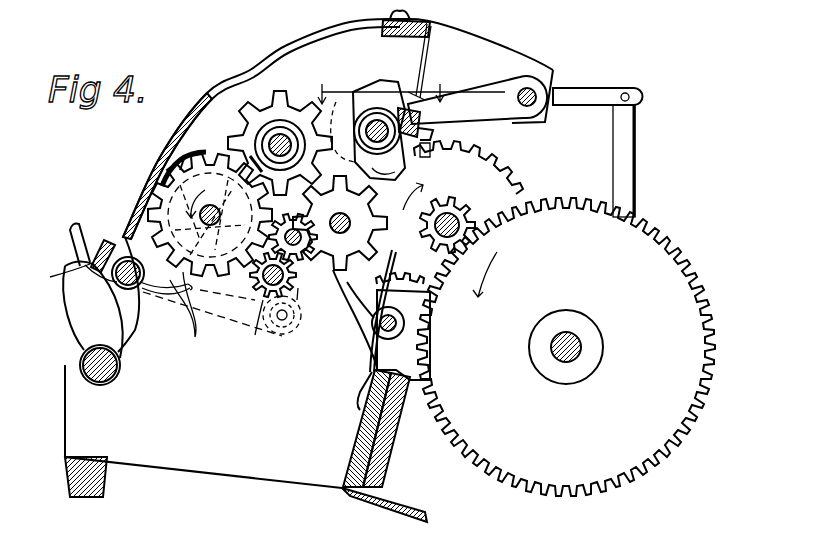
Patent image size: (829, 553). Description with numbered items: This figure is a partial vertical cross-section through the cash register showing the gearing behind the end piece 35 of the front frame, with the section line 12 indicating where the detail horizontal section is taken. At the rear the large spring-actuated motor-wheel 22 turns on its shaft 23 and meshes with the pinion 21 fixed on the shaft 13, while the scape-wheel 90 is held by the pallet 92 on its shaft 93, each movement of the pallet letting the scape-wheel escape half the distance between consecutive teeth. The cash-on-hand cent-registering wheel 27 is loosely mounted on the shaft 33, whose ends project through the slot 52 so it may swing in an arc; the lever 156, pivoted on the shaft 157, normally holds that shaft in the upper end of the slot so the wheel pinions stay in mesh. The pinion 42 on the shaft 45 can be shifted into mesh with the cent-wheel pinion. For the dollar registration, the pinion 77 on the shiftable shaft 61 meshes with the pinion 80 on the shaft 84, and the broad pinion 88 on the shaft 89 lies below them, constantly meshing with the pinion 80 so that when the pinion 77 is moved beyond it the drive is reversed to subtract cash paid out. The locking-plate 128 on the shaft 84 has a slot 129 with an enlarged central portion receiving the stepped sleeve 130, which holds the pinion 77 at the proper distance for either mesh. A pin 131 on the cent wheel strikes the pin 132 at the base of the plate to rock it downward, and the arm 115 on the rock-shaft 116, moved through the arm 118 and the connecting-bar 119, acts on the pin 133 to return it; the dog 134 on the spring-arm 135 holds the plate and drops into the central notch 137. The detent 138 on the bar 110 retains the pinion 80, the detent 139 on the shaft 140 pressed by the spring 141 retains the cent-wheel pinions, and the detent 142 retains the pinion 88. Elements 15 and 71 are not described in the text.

The section line 12 is at (404, 94).
The shaft 13 is at (447, 212).
The shaft 15 is at (287, 311).
The pinion 21 is at (463, 212).
The motor-wheel 22 is at (566, 347).
The shaft 23 is at (580, 352).
The cent-registering wheel 27 is at (216, 225).
The shaft 33 is at (210, 215).
The end piece 35 is at (309, 296).
The pinion 42 is at (212, 316).
The shaft 45 is at (262, 282).
The slot 52 is at (189, 312).
The shaft 61 is at (366, 133).
The pinion 71 is at (306, 222).
The pinion 77 is at (436, 133).
The pinion 80 is at (254, 126).
The shaft 84 is at (281, 125).
The broad pinion 88 is at (340, 223).
The shaft 89 is at (340, 213).
The scape-wheel 90 is at (495, 150).
The pallet 92 is at (352, 303).
The shaft 93 is at (393, 335).
The bar 110 is at (412, 14).
The arm 115 is at (474, 100).
The rock-shaft 116 is at (528, 88).
The arm 118 is at (582, 92).
The connecting-bar 119 is at (626, 144).
The locking-plate 128 is at (336, 104).
The slot 129 is at (379, 130).
The sleeve 130 is at (349, 159).
The pin 131 is at (182, 158).
The pin 132 is at (246, 158).
The pin 133 is at (408, 95).
The dog 134 is at (431, 150).
The spring-arm 135 is at (428, 66).
The notch 137 is at (382, 165).
The detent 138 is at (287, 52).
The detent 139 is at (175, 290).
The shaft 140 is at (114, 280).
The spring 141 is at (71, 263).
The detent 142 is at (365, 348).
The lever 156 is at (90, 330).
The shaft 157 is at (112, 378).